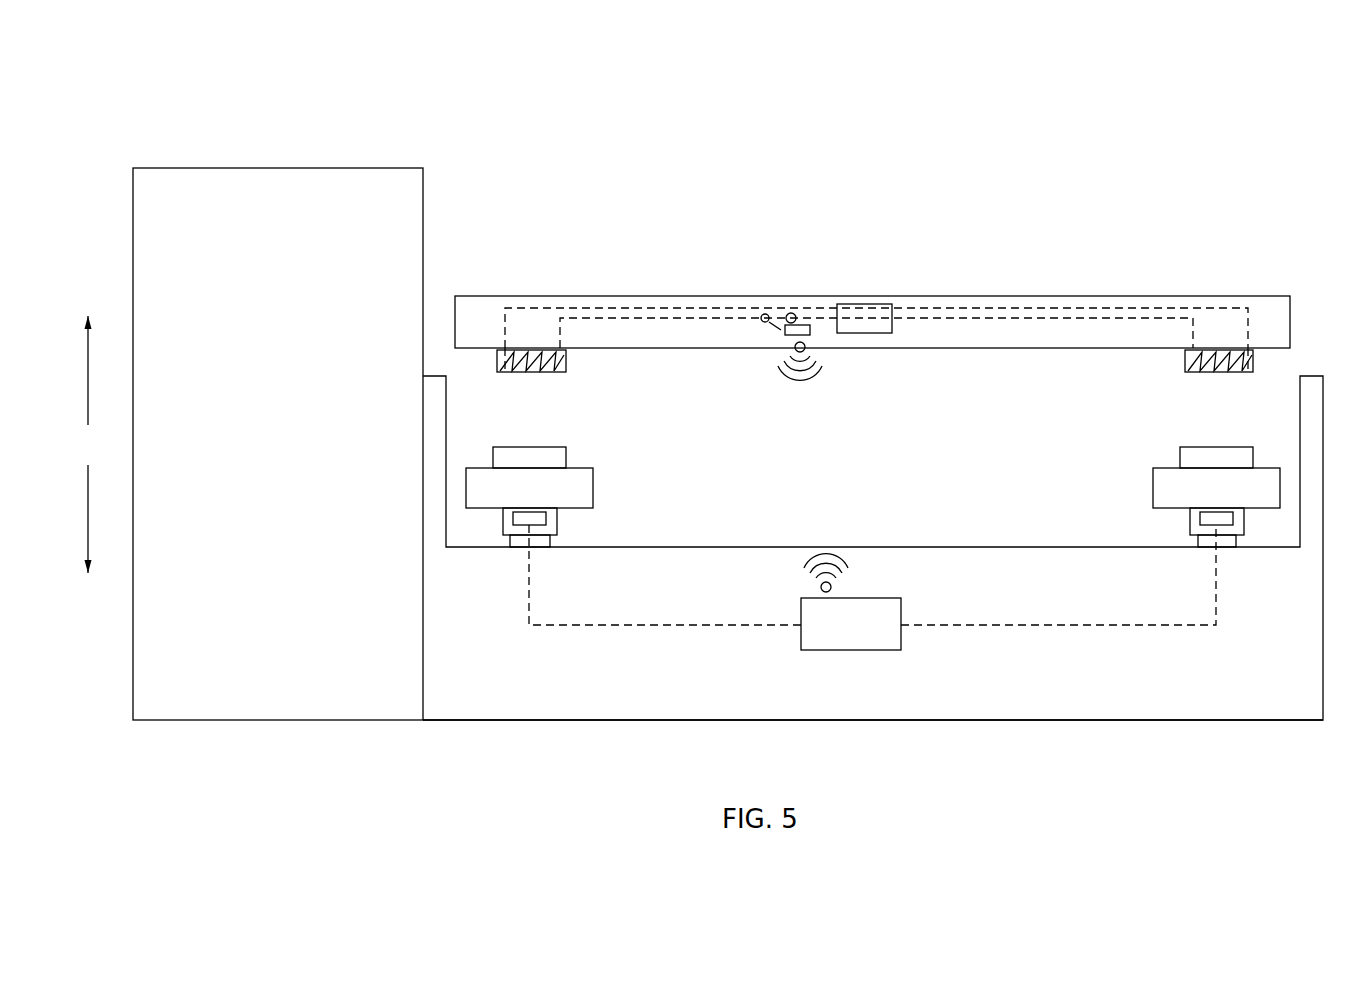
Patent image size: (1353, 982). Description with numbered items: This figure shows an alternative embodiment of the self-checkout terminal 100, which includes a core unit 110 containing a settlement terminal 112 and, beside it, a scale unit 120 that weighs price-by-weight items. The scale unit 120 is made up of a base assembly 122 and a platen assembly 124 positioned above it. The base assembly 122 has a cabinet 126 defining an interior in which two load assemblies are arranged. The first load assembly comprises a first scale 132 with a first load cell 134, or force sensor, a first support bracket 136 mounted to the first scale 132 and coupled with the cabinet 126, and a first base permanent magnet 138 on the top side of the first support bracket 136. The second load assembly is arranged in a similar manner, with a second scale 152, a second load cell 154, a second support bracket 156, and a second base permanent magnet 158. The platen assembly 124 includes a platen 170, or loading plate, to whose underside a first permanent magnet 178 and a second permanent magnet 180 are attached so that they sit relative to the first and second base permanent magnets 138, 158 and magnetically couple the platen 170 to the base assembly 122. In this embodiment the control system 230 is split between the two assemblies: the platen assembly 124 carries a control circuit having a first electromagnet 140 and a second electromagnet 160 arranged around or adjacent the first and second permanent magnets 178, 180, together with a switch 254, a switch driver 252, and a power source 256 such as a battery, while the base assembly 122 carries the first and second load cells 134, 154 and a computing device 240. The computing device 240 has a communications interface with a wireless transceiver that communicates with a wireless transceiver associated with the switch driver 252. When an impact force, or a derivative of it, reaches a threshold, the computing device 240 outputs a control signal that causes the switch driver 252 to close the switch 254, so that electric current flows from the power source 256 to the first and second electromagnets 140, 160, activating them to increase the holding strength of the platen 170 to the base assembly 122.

The self-checkout terminal 100 is at (1228, 82).
The core unit 110 is at (286, 154).
The settlement terminal 112 is at (294, 456).
The scale unit 120 is at (824, 192).
The base assembly 122 is at (1061, 737).
The platen assembly 124 is at (611, 274).
The cabinet 126 is at (503, 696).
The first scale 132 is at (557, 532).
The first load cell 134 is at (557, 521).
The first support bracket 136 is at (593, 483).
The first base permanent magnet 138 is at (566, 458).
The first electromagnet 140 is at (509, 372).
The second scale 152 is at (1200, 530).
The second load cell 154 is at (1190, 520).
The second support bracket 156 is at (1153, 483).
The second base permanent magnet 158 is at (1180, 458).
The second electromagnet 160 is at (1252, 372).
The platen 170 is at (1000, 296).
The first permanent magnet 178 is at (566, 356).
The second permanent magnet 180 is at (1185, 356).
The control system 230 is at (1119, 294).
The computing device 240 is at (901, 611).
The switch driver 252 is at (815, 298).
The switch 254 is at (768, 298).
The power source 256 is at (887, 298).